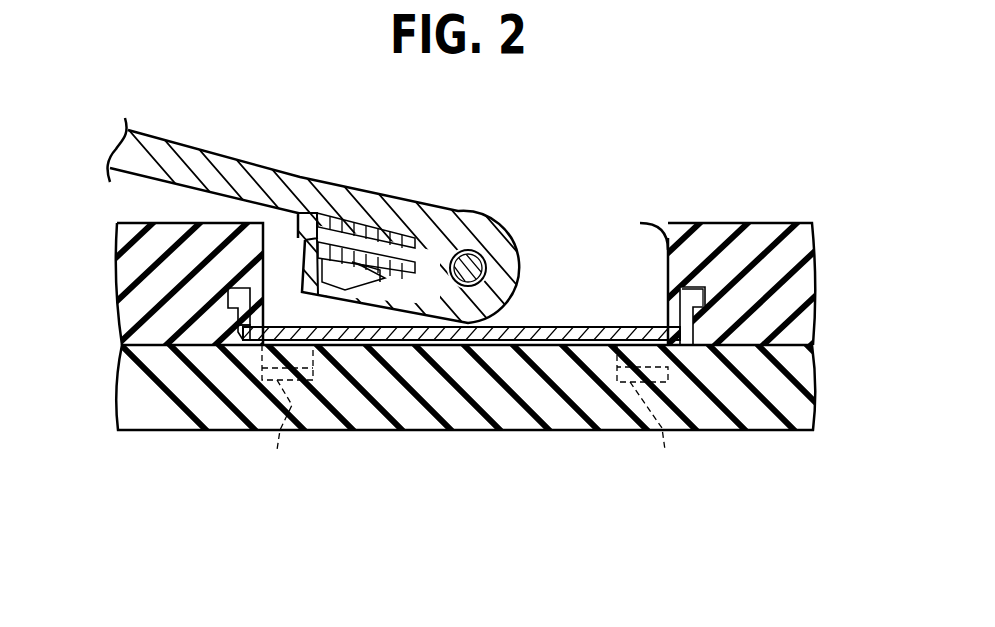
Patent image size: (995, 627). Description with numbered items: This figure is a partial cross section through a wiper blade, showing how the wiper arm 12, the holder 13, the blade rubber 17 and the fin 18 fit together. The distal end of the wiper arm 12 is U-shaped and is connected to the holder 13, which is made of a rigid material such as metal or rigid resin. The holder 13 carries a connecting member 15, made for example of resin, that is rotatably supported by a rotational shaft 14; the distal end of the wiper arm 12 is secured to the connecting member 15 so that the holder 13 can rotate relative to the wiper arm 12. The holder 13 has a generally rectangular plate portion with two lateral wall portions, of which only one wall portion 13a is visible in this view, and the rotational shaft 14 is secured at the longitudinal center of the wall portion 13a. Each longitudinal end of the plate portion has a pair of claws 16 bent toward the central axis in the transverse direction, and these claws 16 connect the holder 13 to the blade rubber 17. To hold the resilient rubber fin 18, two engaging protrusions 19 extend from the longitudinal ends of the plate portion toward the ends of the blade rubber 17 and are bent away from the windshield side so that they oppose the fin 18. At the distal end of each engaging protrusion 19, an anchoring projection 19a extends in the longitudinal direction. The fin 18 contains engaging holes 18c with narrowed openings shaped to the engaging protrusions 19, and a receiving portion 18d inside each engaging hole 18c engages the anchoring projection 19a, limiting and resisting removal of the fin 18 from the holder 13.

The wiper arm 12 is at (288, 166).
The holder 13 is at (549, 222).
The wall portion 13a is at (614, 236).
The rotational shaft 14 is at (465, 236).
The connecting member 15 is at (292, 208).
The claw 16 is at (472, 416).
The blade rubber 17 is at (808, 374).
The fin 18 is at (772, 222).
The engaging hole 18c is at (252, 297).
The receiving portion 18d is at (228, 293).
The engaging protrusion 19 is at (686, 300).
The anchoring projection 19a is at (700, 288).